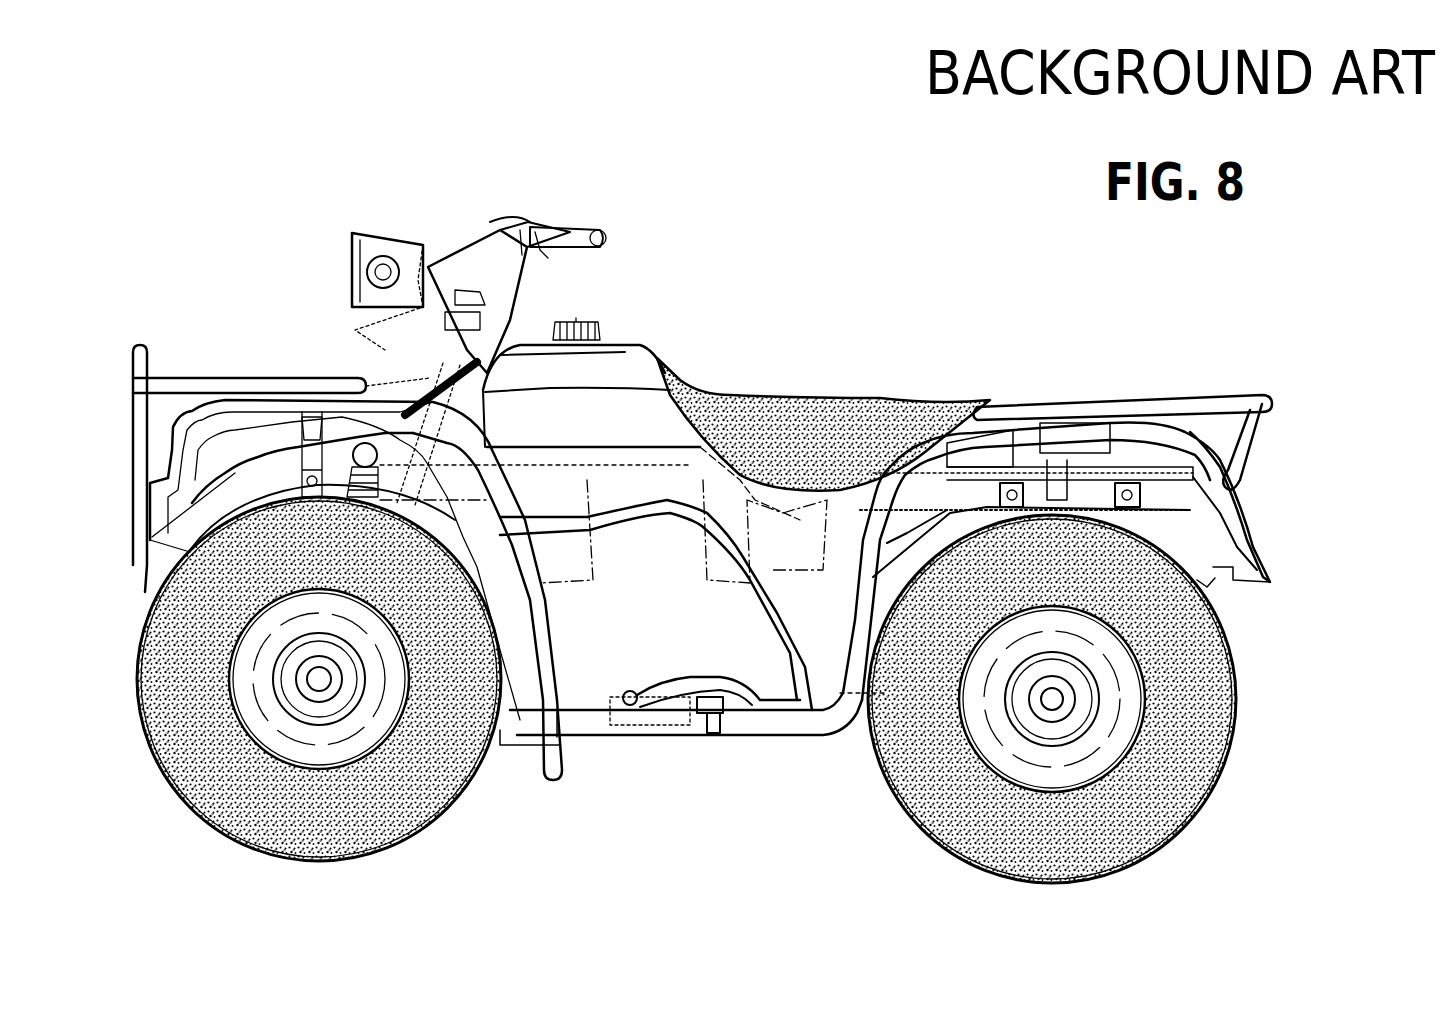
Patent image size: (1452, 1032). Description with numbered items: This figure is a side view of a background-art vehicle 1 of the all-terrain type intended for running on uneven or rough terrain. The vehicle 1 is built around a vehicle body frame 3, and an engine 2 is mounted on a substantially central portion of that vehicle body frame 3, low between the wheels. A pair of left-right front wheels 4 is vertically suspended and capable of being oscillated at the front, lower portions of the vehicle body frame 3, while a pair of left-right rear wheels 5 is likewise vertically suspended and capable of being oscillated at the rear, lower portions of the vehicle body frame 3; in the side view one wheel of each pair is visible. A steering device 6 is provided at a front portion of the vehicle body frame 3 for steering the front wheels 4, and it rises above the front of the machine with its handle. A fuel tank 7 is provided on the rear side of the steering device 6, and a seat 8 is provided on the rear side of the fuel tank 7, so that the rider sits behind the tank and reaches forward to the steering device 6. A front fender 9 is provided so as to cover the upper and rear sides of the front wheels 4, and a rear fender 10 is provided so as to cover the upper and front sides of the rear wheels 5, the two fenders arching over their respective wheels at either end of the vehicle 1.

The vehicle 1 is at (646, 344).
The engine 2 is at (659, 652).
The vehicle body frame 3 is at (592, 744).
The front wheels 4 is at (152, 752).
The rear wheels 5 is at (907, 824).
The steering device 6 is at (547, 225).
The fuel tank 7 is at (622, 346).
The seat 8 is at (842, 422).
The front fender 9 is at (264, 434).
The rear fender 10 is at (1152, 437).